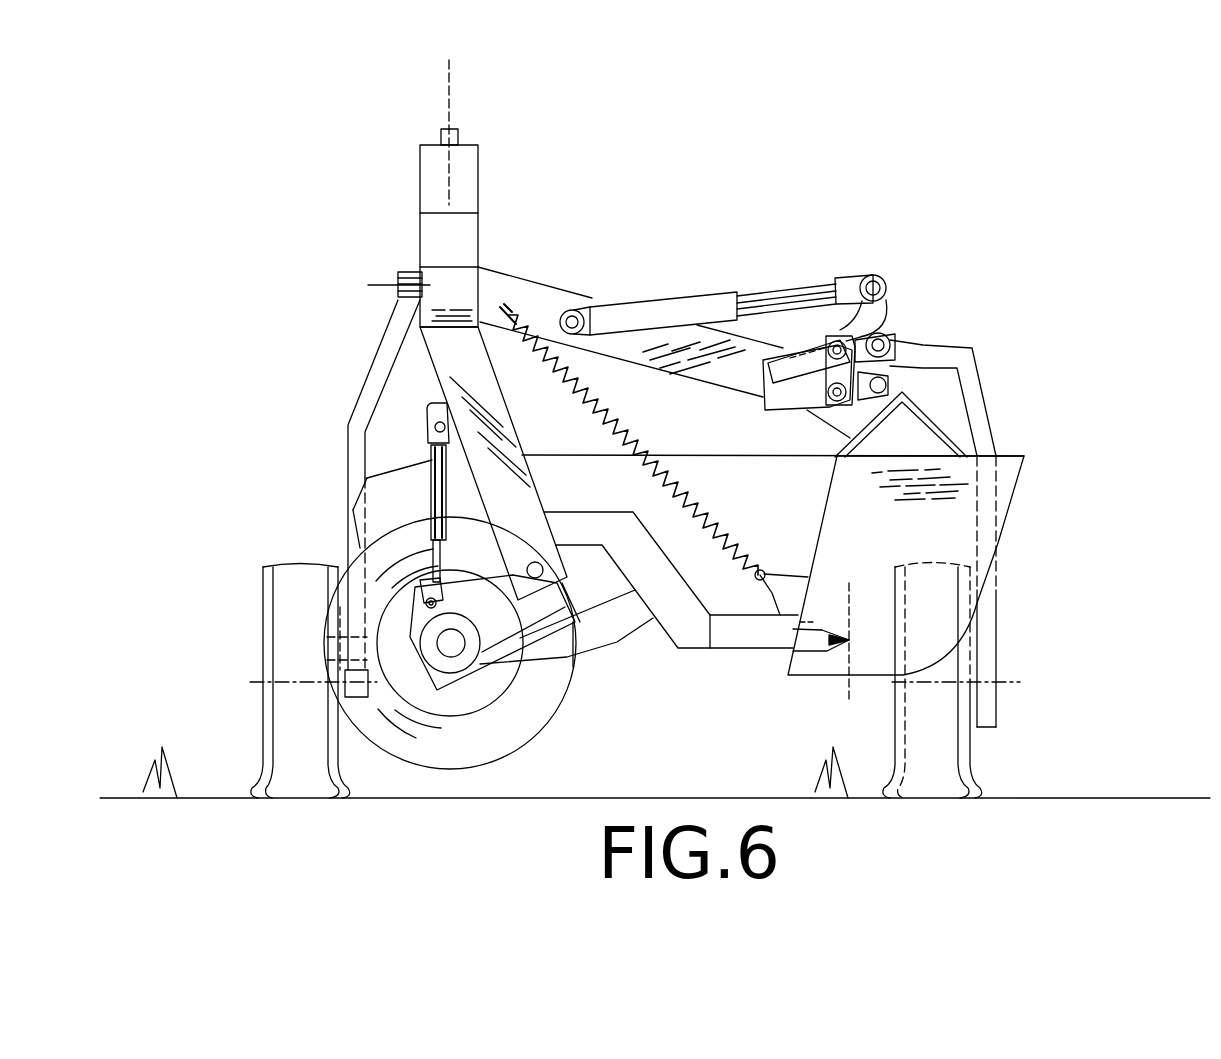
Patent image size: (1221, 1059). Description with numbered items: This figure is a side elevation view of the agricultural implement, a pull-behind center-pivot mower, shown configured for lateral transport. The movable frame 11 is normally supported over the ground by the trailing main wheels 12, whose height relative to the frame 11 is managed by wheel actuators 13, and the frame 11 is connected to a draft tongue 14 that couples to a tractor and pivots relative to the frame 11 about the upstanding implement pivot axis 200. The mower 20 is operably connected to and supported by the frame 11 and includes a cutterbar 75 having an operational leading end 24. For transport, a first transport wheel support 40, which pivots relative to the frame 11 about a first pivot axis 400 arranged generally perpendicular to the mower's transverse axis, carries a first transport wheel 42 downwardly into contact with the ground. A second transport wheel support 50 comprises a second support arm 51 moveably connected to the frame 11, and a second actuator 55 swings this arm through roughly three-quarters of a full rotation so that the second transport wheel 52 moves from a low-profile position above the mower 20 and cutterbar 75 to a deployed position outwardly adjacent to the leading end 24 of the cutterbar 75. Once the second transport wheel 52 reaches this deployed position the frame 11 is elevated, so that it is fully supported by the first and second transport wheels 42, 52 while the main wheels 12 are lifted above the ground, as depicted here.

The frame 11 is at (458, 248).
The main wheels 12 is at (527, 700).
The wheel actuators 13 is at (433, 498).
The draft tongue 14 is at (420, 188).
The mower 20 is at (1040, 453).
The leading end 24 is at (848, 692).
The first transport wheel support 40 is at (213, 378).
The first transport wheel 42 is at (290, 612).
The second transport wheel support 50 is at (975, 284).
The second support arm 51 is at (975, 423).
The second transport wheel 52 is at (943, 768).
The second actuator 55 is at (643, 306).
The cutterbar 75 is at (826, 597).
The implement pivot axis 200 is at (448, 117).
The first pivot axis 400 is at (383, 283).